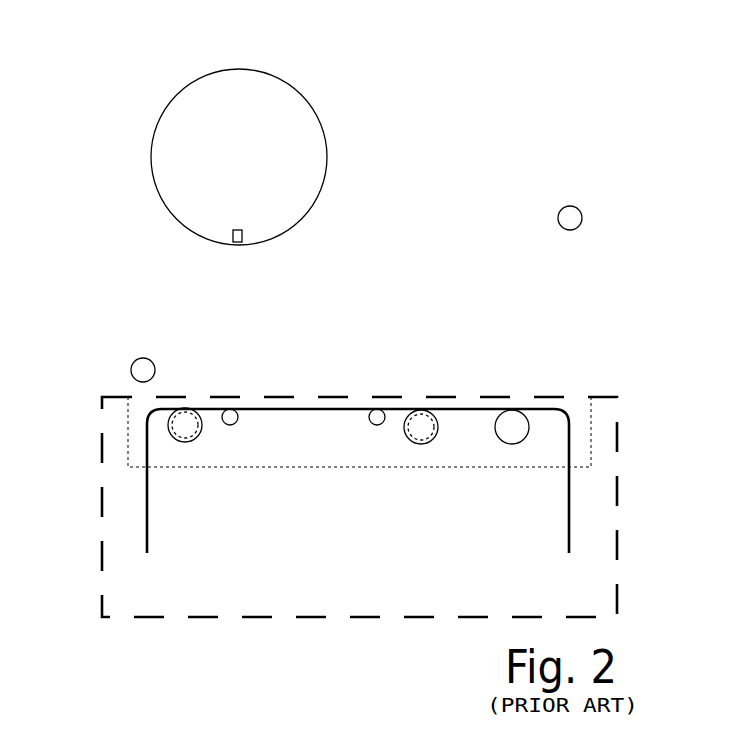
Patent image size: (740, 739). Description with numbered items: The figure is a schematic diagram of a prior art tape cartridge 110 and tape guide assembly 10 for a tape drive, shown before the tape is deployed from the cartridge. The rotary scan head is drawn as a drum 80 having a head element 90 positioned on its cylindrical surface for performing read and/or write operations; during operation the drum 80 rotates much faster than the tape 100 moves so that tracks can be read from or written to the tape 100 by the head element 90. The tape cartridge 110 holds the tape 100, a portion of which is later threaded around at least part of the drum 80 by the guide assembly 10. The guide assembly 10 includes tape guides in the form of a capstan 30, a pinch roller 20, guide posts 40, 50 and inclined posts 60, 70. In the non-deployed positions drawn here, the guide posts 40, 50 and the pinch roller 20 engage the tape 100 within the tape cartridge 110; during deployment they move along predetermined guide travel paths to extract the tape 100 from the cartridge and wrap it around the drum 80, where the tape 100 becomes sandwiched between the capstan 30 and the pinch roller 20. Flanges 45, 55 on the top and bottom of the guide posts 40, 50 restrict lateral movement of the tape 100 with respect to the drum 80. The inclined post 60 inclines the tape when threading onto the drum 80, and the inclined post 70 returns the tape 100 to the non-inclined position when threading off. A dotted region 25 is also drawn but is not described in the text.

The tape guide assembly 10 is at (600, 320).
The pinch roller 20 is at (512, 422).
The mounting region 25 is at (127, 445).
The capstan 30 is at (568, 213).
The guide post 40 is at (190, 420).
The flange 45 is at (197, 440).
The guide post 50 is at (427, 425).
The flange 55 is at (433, 442).
The inclined post 60 is at (230, 413).
The inclined post 70 is at (378, 415).
The drum 80 is at (210, 100).
The head element 90 is at (243, 238).
The tape 100 is at (570, 514).
The tape cartridge 110 is at (367, 573).